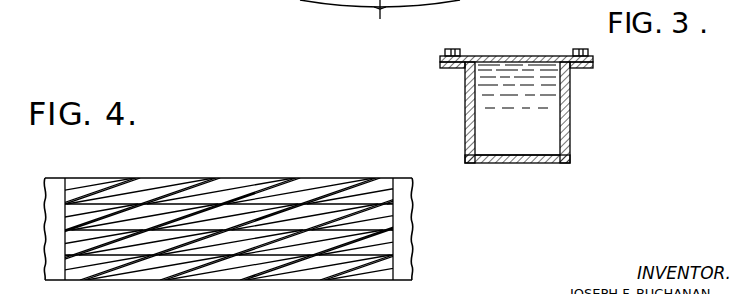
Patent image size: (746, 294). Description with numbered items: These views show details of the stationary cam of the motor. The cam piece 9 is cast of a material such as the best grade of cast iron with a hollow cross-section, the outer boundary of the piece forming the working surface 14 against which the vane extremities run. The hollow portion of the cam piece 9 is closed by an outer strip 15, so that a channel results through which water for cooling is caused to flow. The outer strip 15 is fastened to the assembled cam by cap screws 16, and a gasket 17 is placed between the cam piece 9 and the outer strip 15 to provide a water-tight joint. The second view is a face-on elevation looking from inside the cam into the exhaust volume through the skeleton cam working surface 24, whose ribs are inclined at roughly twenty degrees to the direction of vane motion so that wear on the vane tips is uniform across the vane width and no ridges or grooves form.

In FIG. 3, the cam piece 9 is at (570, 108).
In FIG. 3, the working surface 14 is at (525, 163).
In FIG. 4, the working surface 14 is at (45, 220).
In FIG. 3, the outer strip 15 is at (523, 56).
In FIG. 3, the cap screws 16 is at (520, 43).
In FIG. 3, the gasket 17 is at (444, 58).
In FIG. 4, the skeleton cam working surface 24 is at (110, 268).